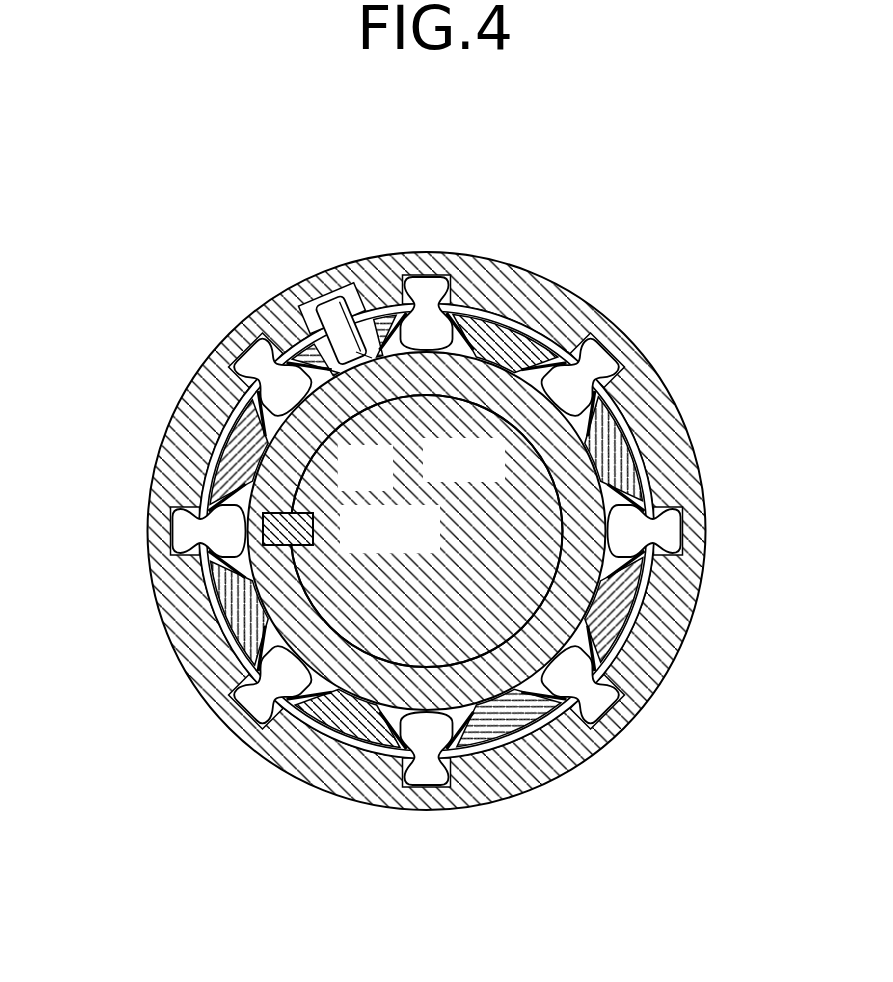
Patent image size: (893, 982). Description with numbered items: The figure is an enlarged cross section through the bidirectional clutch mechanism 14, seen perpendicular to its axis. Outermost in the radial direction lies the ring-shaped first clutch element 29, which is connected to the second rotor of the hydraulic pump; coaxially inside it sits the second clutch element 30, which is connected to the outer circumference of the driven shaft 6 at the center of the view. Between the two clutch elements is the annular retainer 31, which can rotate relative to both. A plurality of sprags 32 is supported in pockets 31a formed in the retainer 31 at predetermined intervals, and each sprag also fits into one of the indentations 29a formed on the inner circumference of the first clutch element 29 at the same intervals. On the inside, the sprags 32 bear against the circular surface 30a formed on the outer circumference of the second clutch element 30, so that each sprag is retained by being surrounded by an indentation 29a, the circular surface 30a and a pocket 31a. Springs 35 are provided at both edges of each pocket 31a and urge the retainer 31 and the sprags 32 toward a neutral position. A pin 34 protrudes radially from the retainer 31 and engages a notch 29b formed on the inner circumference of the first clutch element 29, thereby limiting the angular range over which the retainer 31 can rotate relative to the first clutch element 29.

The driven shaft 6 is at (437, 551).
The bidirectional clutch mechanism 14 is at (624, 310).
The first clutch element 29 is at (291, 292).
The indentations 29a is at (447, 290).
The notch 29b is at (352, 345).
The second clutch element 30 is at (320, 601).
The circular surface 30a is at (460, 352).
The retainer 31 is at (636, 460).
The pockets 31a is at (458, 312).
The sprags 32 is at (418, 292).
The pin 34 is at (363, 358).
The springs 35 is at (392, 345).